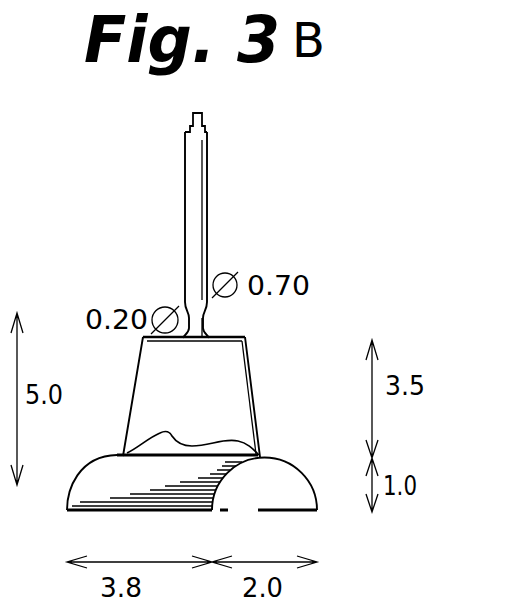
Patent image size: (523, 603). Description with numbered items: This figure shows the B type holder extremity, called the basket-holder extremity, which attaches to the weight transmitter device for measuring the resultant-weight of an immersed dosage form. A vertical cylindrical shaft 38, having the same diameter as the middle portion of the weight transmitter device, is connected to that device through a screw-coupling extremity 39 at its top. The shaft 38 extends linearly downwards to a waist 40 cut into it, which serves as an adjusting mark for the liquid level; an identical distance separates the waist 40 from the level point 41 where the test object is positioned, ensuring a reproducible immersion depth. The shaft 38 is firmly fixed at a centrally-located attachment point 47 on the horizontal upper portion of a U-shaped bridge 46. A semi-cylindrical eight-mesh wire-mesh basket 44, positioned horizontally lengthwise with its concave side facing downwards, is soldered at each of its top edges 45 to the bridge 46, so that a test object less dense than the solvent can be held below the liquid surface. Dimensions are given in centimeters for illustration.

The vertical cylindrical shaft 38 is at (208, 204).
The screw-coupling extremity 39 is at (205, 124).
The waist 40 is at (199, 313).
The level point 41 is at (67, 489).
The wire-mesh basket 44 is at (222, 478).
The top edges 45 is at (193, 430).
The U-shaped bridge 46 is at (258, 413).
The attachment point 47 is at (188, 340).